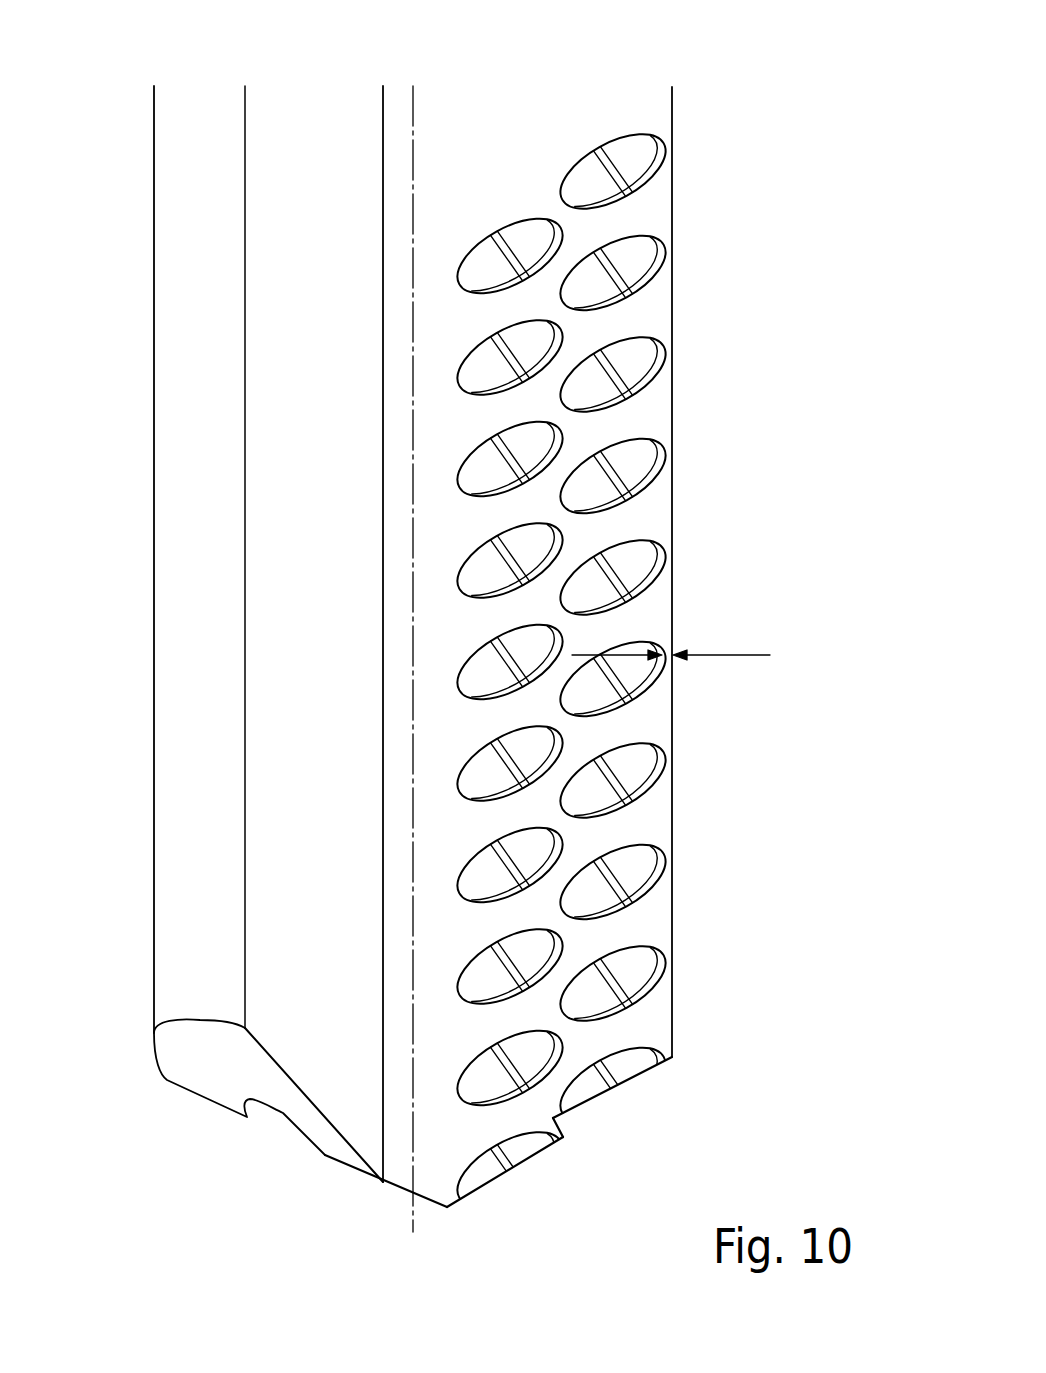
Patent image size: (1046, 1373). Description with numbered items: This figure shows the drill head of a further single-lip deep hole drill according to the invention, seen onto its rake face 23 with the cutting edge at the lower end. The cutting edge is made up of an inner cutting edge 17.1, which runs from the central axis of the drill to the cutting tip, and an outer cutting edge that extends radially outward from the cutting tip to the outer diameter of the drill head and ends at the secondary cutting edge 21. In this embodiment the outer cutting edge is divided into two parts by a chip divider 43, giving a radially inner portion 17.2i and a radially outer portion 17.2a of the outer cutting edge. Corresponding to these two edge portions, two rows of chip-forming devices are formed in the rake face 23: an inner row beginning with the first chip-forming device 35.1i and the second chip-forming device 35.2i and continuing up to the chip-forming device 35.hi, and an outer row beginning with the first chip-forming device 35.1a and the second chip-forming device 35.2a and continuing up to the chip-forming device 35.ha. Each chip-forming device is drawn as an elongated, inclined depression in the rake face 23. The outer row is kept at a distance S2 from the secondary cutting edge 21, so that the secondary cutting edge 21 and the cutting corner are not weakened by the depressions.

The secondary cutting edge 21 is at (673, 392).
The rake face 23 is at (650, 518).
The chip-forming device of the outer row 35.ha is at (633, 147).
The chip-forming device of the inner row 35.hi is at (530, 235).
The second chip-forming device of the outer row 35.2a is at (642, 957).
The first chip-forming device of the outer row 35.1a is at (643, 1053).
The second chip-forming device of the inner row 35.2i is at (480, 1078).
The first chip-forming device of the inner row 35.1i is at (480, 1173).
The inner cutting edge 17.1 is at (390, 1183).
The inner portion of the outer cutting edge 17.2i is at (482, 1190).
The outer portion of the outer cutting edge 17.2a is at (633, 1073).
The chip divider 43 is at (563, 1128).
The distance S2 is at (671, 640).